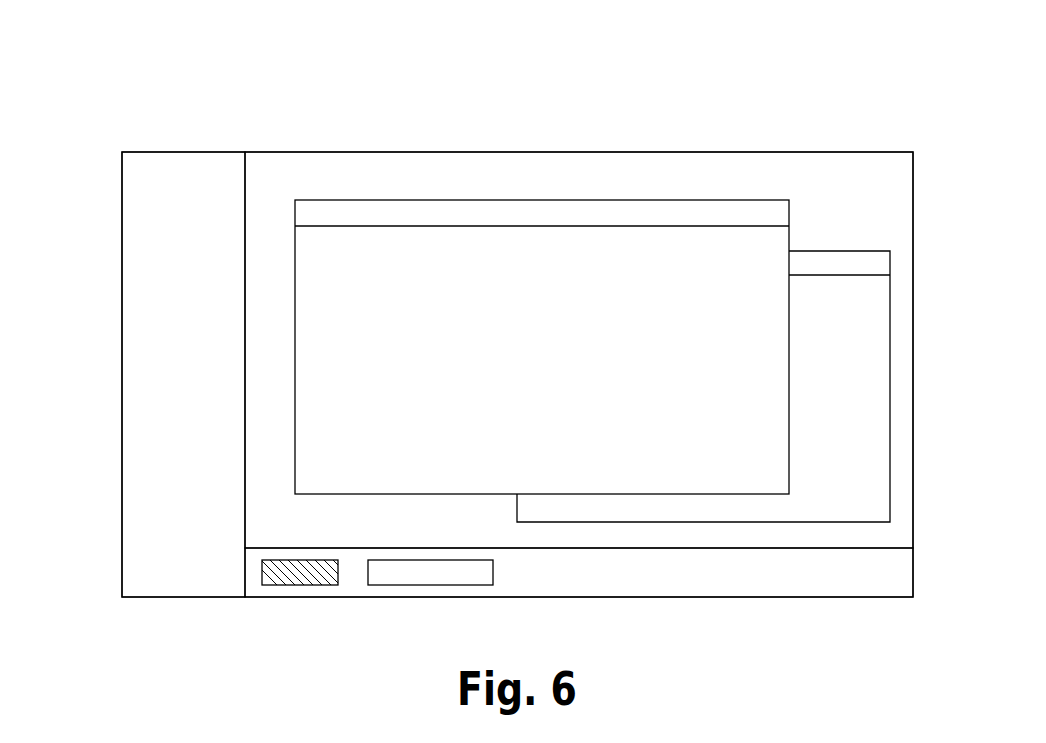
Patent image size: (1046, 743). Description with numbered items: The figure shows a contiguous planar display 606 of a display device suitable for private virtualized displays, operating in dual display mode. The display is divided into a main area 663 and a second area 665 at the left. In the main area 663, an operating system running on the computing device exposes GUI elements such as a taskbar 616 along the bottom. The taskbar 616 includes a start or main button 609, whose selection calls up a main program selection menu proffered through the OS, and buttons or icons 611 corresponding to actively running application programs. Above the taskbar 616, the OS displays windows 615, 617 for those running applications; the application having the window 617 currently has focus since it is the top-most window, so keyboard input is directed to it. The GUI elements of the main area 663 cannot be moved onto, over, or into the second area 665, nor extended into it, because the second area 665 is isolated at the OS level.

The contiguous planar display 606 is at (327, 100).
The second area 665 is at (123, 147).
The main area 663 is at (722, 149).
The window 617 is at (578, 225).
The window 615 is at (835, 250).
The taskbar 616 is at (913, 572).
The main button 609 is at (321, 586).
The buttons or icons 611 is at (468, 586).